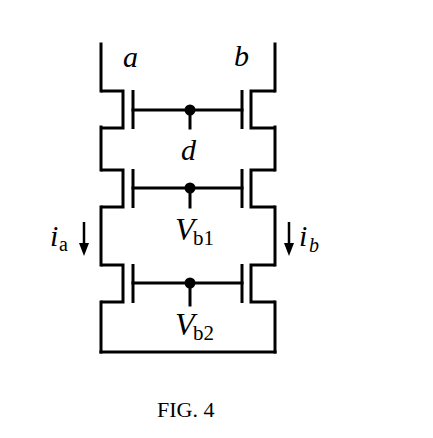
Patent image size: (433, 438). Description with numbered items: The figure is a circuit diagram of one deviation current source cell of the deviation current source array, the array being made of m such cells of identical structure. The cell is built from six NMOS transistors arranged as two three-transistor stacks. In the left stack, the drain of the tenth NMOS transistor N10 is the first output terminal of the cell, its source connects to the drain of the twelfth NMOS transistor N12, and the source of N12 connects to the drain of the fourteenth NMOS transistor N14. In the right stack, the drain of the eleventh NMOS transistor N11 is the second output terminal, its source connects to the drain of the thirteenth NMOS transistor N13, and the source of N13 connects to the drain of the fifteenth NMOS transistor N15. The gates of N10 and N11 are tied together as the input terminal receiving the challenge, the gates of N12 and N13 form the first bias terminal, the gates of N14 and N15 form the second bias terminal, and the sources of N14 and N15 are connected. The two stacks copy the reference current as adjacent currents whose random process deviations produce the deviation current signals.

The 10th NMOS transistor N10 is at (90, 109).
The 11th NMOS transistor N11 is at (283, 109).
The 12th NMOS transistor N12 is at (90, 188).
The 13th NMOS transistor N13 is at (283, 188).
The 14th NMOS transistor N14 is at (90, 283).
The 15th NMOS transistor N15 is at (283, 283).